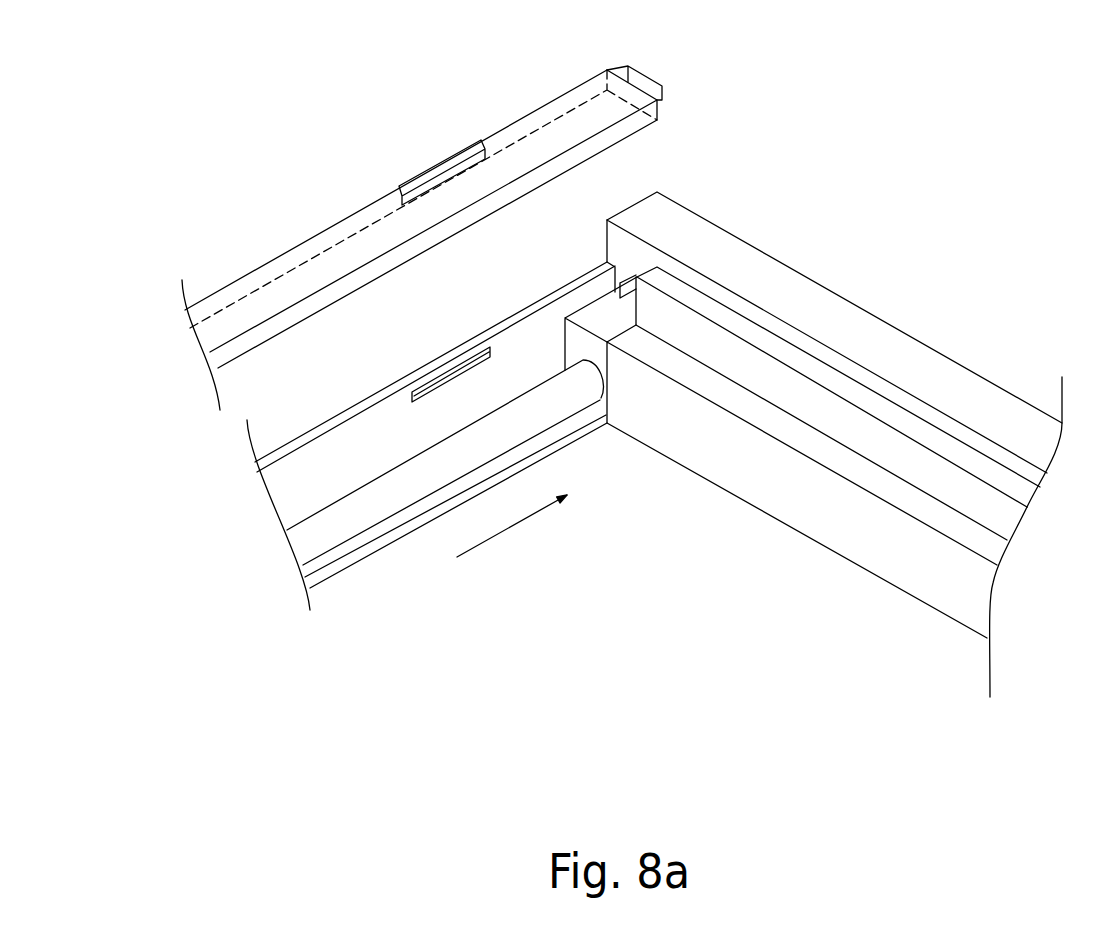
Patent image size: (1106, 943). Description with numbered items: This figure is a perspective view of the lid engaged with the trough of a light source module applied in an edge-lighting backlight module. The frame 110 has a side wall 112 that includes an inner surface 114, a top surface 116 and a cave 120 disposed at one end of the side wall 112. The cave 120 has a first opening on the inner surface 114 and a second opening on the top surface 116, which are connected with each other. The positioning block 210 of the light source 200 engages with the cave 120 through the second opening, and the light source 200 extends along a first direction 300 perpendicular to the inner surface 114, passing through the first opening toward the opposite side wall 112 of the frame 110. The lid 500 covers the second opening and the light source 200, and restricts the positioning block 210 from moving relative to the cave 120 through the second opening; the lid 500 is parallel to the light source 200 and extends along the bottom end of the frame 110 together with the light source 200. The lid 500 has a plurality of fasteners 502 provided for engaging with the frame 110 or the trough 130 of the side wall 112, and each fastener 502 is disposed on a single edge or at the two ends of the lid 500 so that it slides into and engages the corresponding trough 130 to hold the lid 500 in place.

The frame 110 is at (320, 433).
The side wall 112 is at (863, 338).
The inner surface 114 is at (838, 520).
The top surface 116 is at (702, 383).
The cave 120 is at (625, 256).
The trough 130 is at (457, 366).
The light source 200 is at (335, 522).
The positioning block 210 is at (598, 403).
The first direction 300 is at (512, 536).
The lid 500 is at (582, 112).
The fastener 502 is at (637, 75).